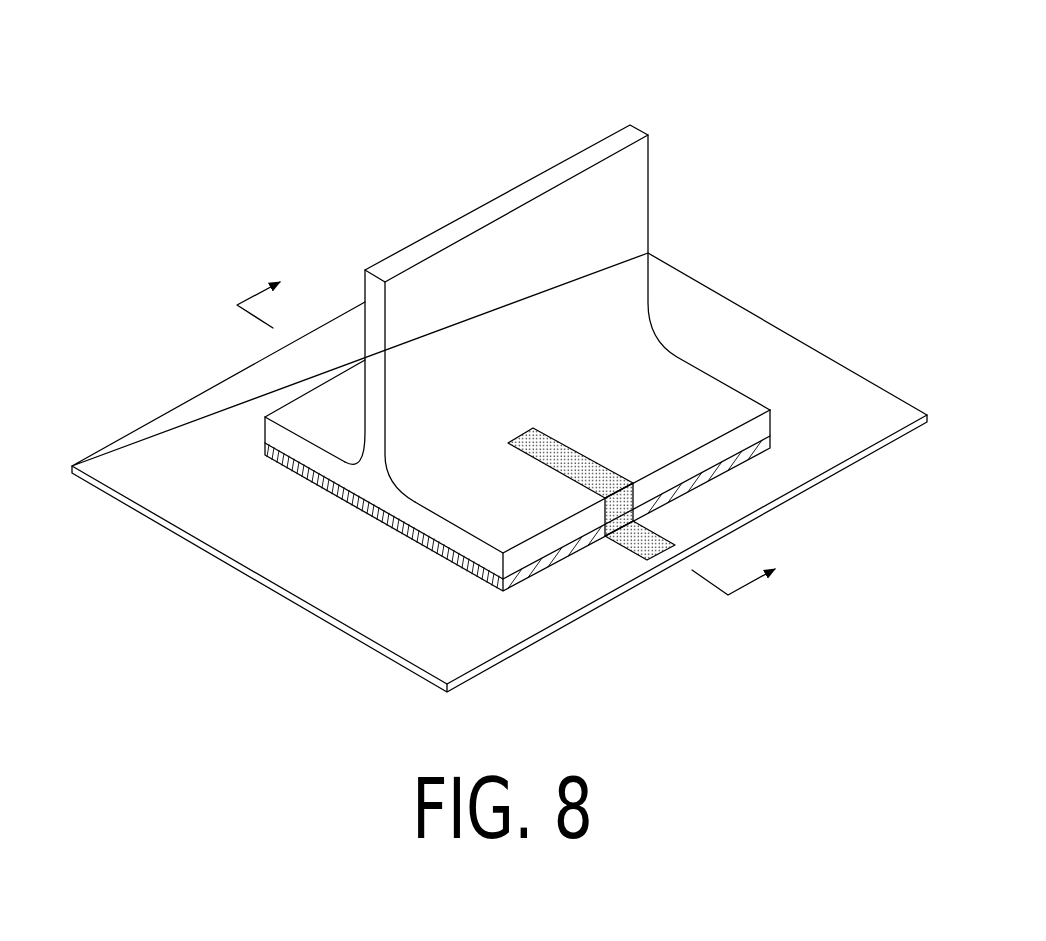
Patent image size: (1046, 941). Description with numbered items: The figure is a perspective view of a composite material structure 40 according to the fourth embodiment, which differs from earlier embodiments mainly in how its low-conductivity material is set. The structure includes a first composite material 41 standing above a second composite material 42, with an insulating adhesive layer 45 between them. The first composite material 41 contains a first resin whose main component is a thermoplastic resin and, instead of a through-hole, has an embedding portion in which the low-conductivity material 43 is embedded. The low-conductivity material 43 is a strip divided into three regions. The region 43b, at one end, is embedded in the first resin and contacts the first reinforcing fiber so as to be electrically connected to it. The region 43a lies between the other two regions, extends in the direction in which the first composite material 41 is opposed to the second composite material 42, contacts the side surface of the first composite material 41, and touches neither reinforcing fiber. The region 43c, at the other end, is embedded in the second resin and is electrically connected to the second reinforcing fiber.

The composite material structure 40 is at (499, 395).
The first composite material 41 is at (635, 221).
The second composite material 42 is at (785, 366).
The low-conductivity material 43 is at (687, 466).
The region 43a is at (640, 508).
The region 43b is at (570, 470).
The region 43c is at (641, 565).
The insulating adhesive layer 45 is at (405, 537).